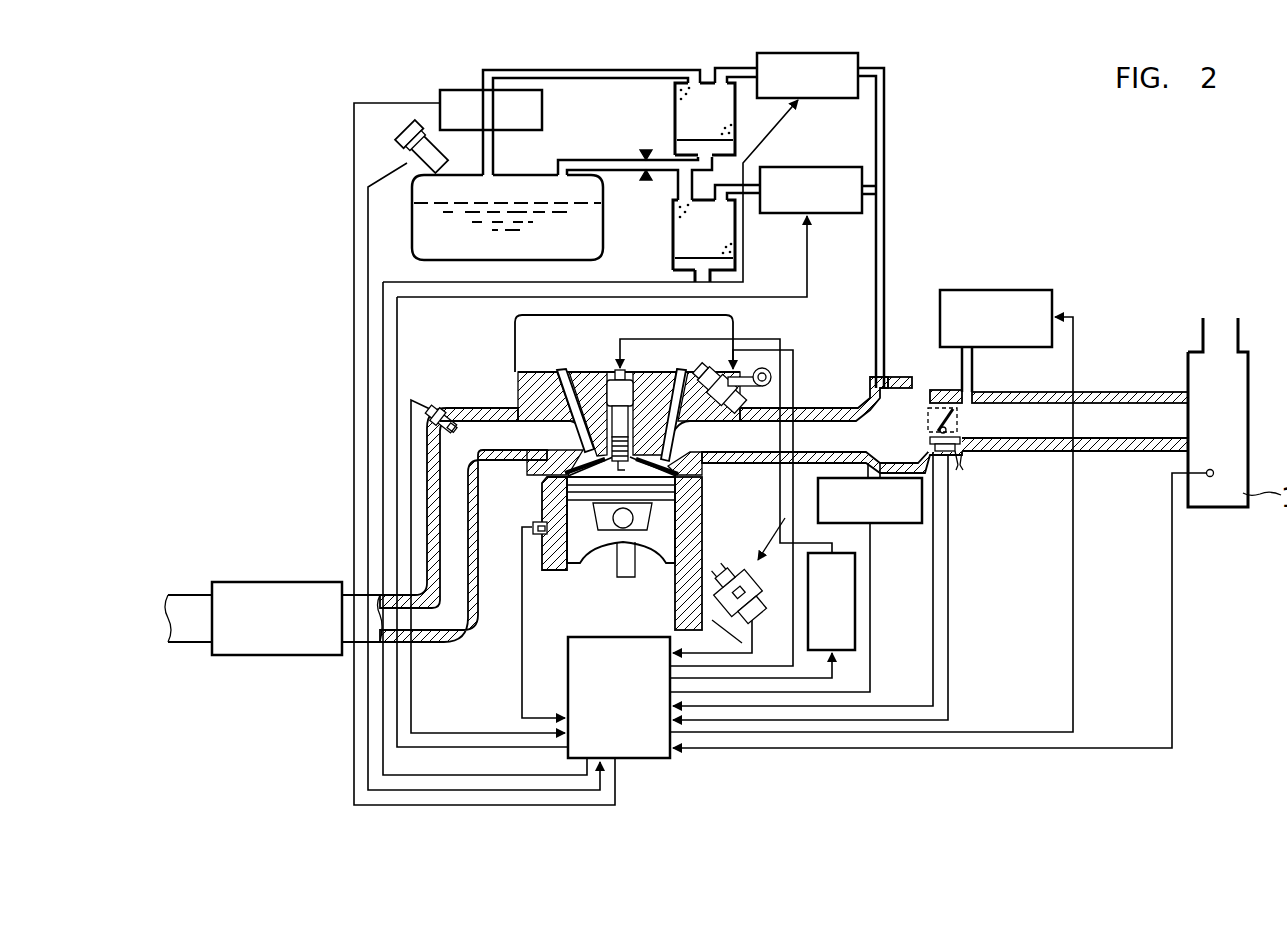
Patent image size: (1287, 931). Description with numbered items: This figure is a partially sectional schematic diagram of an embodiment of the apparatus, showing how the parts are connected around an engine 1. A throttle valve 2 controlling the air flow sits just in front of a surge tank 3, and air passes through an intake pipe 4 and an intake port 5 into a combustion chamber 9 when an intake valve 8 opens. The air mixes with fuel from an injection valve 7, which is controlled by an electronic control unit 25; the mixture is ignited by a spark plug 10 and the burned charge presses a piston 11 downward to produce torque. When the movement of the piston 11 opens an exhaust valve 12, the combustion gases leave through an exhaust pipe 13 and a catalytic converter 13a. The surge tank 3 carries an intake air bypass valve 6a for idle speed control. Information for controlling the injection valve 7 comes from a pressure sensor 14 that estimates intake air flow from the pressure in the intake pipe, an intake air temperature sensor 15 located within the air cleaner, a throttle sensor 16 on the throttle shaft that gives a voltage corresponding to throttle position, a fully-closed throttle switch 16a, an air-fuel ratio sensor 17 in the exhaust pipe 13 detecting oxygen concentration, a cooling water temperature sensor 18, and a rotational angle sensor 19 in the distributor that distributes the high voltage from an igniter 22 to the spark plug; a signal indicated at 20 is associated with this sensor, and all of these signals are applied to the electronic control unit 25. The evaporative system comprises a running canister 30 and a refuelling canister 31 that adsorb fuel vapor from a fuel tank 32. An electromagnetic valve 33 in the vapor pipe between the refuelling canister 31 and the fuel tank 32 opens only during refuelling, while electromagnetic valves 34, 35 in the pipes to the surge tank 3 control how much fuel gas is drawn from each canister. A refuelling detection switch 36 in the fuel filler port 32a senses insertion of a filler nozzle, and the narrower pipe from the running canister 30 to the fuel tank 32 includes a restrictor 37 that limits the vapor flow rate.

The engine 1 is at (630, 588).
The throttle valve 2 is at (957, 414).
The surge tank 3 is at (898, 375).
The intake pipe 4 is at (800, 458).
The intake port 5 is at (738, 442).
The intake air bypass valve 6a is at (998, 290).
The injection valve 7 is at (733, 355).
The intake valve 8 is at (656, 432).
The combustion chamber 9 is at (652, 470).
The spark plug 10 is at (605, 380).
The piston 11 is at (592, 560).
The exhaust valve 12 is at (588, 442).
The exhaust pipe 13 is at (500, 408).
The catalytic converter 13a is at (286, 582).
The pressure sensor 14 is at (895, 523).
The intake air temperature sensor 15 is at (1215, 473).
The throttle sensor 16 is at (928, 437).
The fully-closed throttle switch 16a is at (962, 450).
The air-fuel ratio sensor 17 is at (452, 428).
The cooling water temperature sensor 18 is at (534, 526).
The rotational angle sensor 19 is at (745, 608).
The crank signal 20 is at (728, 580).
The igniter 22 is at (855, 610).
The electronic control unit 25 is at (568, 655).
The running canister 30 is at (673, 205).
The refuelling canister 31 is at (675, 95).
The fuel tank 32 is at (600, 190).
The fuel filler port 32a is at (448, 166).
The electromagnetic valve 33 is at (542, 108).
The electromagnetic valve 34 is at (832, 98).
The electromagnetic valve 35 is at (793, 167).
The refuelling detection switch 36 is at (421, 148).
The restrictor 37 is at (645, 157).